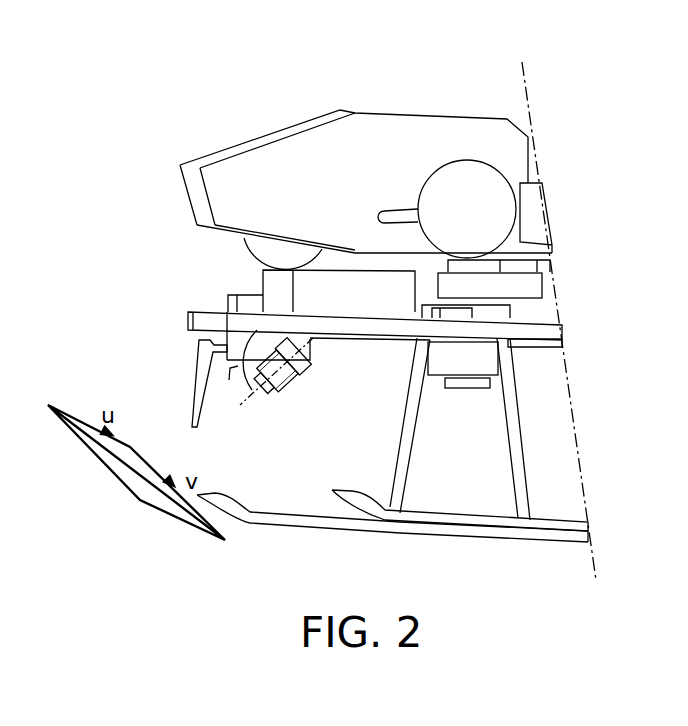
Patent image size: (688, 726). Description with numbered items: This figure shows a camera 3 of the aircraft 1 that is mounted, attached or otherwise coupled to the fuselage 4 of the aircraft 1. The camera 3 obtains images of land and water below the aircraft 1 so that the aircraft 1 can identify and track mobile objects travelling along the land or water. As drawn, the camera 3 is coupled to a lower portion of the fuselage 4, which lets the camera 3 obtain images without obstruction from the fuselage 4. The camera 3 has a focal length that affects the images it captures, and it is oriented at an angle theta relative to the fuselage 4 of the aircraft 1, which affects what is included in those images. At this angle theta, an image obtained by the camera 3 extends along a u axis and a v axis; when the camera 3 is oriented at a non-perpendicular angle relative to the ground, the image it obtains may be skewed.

The aircraft 1 is at (117, 33).
The camera 3 is at (288, 388).
The fuselage 4 is at (258, 137).